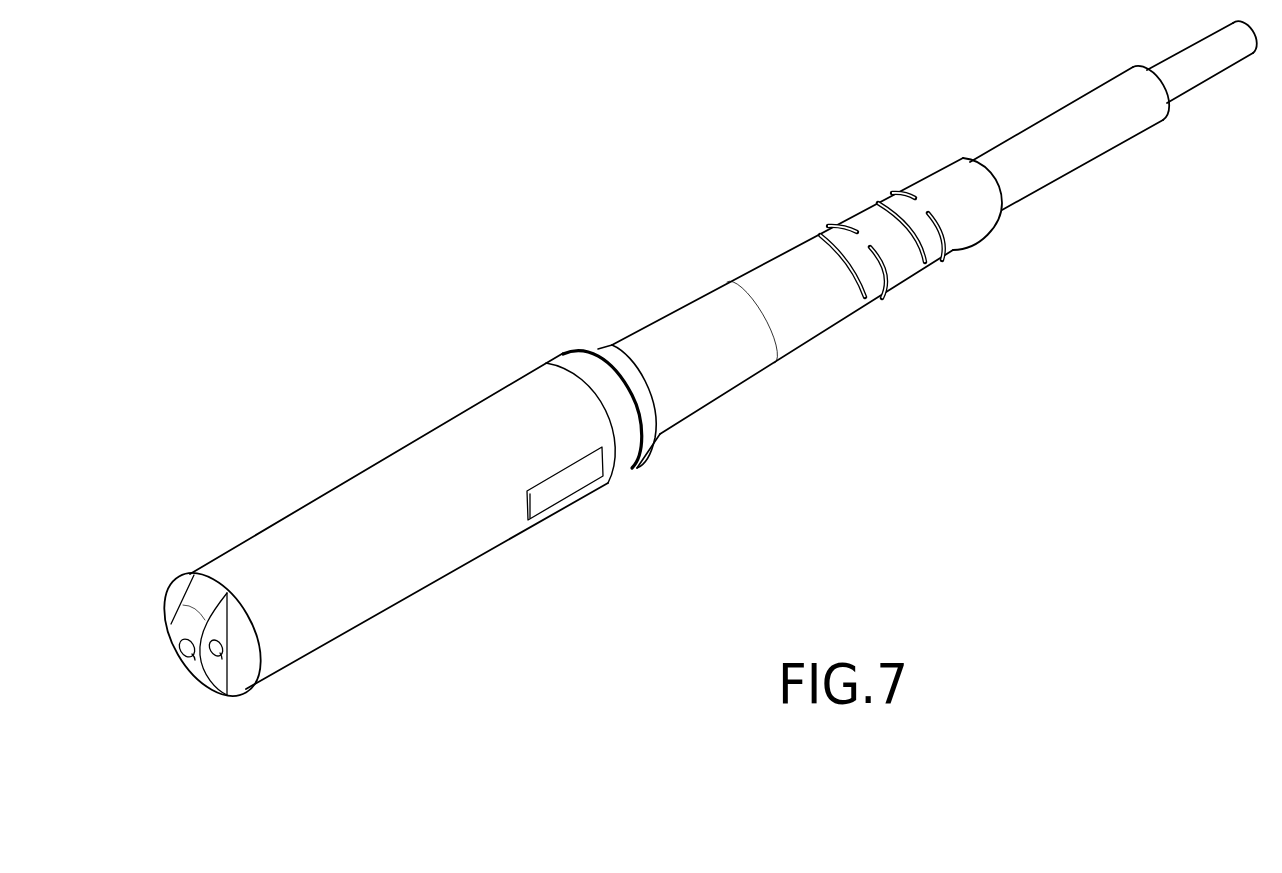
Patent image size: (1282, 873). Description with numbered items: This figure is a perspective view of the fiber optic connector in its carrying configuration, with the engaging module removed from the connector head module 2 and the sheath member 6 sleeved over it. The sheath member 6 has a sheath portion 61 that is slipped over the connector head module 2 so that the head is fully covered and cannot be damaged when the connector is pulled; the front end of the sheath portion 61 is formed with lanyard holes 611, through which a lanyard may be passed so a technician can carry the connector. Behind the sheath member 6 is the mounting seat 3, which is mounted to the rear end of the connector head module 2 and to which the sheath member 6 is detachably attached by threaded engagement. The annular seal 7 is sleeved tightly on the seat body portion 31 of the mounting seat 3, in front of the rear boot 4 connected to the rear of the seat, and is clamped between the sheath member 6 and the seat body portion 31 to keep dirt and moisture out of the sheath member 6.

The connector head module 2 is at (415, 528).
The mounting seat 3 is at (641, 474).
The seat body portion 31 is at (591, 350).
The rear boot 4 is at (707, 385).
The sheath member 6 is at (295, 492).
The sheath portion 61 is at (356, 484).
The lanyard hole 611 is at (218, 657).
The annular seal 7 is at (646, 439).